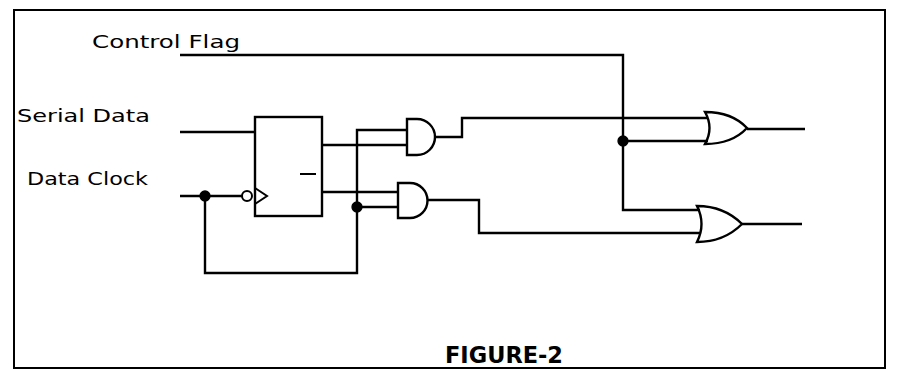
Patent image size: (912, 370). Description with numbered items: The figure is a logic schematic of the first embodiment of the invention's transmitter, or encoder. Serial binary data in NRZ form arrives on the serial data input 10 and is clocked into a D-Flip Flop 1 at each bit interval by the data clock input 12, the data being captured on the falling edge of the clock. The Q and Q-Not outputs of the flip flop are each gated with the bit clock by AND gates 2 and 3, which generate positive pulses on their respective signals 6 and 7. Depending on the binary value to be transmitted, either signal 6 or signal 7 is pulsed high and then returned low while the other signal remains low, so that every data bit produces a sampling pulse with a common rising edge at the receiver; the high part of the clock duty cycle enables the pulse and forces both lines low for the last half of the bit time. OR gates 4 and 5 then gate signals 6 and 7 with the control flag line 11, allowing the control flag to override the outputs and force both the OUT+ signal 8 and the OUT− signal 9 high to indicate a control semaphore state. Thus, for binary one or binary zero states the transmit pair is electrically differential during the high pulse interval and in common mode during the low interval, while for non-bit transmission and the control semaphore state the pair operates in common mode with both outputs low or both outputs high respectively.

The D-Flip Flop 1 is at (324, 153).
The AND gate 2 is at (421, 128).
The AND gate 3 is at (416, 192).
The OR gate 4 is at (726, 116).
The OR gate 5 is at (719, 214).
The signal 6 is at (541, 115).
The signal 7 is at (539, 228).
The OUT+ signal 8 is at (801, 120).
The OUT− signal 9 is at (796, 215).
The serial data input line 10 is at (218, 127).
The control flag line 11 is at (350, 50).
The data clock input line 12 is at (223, 191).